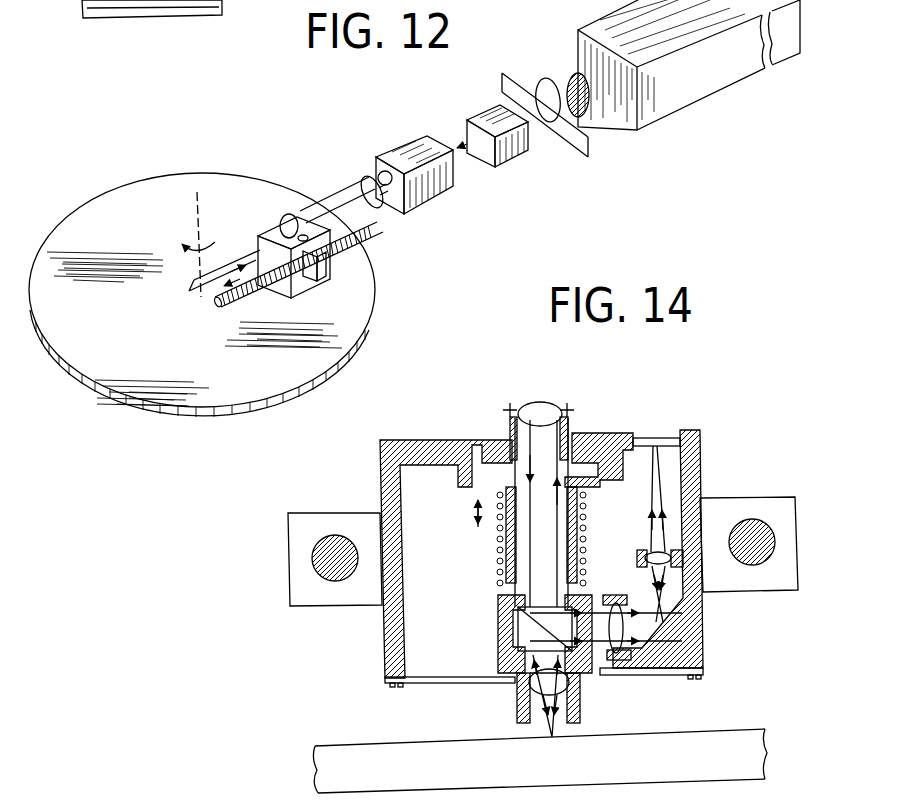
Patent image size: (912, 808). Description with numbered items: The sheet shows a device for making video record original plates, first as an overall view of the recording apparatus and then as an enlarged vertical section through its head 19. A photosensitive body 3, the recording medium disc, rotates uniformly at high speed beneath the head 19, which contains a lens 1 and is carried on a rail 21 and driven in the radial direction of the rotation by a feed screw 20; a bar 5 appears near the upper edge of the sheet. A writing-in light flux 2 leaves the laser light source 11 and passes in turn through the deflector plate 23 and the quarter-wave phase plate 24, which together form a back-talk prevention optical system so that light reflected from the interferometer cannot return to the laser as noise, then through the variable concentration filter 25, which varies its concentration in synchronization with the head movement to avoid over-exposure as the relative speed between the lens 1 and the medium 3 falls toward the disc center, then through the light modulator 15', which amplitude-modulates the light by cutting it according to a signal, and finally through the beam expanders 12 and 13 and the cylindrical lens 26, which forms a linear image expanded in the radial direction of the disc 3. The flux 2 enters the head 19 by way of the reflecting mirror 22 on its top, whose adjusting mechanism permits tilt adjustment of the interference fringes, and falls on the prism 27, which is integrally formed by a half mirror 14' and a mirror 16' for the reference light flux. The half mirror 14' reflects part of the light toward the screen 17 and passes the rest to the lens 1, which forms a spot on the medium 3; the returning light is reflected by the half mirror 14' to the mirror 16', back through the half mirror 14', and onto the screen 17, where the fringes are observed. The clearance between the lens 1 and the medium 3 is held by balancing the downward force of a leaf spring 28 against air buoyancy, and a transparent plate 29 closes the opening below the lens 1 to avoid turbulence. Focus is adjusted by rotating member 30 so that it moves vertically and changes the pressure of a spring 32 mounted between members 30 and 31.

In FIG. 14, the lens 1 is at (513, 683).
In FIG. 12, the writing-in light flux 2 is at (337, 196).
In FIG. 12, the photosensitive body 3 is at (342, 328).
In FIG. 14, the photosensitive body 3 is at (748, 746).
In FIG. 12, the support bar 5 is at (223, 4).
In FIG. 12, the laser light source 11 is at (685, 85).
In FIG. 12, the beam expander 12 is at (425, 190).
In FIG. 12, the beam expander 13 is at (430, 200).
In FIG. 14, the half mirror 14' is at (522, 640).
In FIG. 12, the light modulator 15' is at (511, 162).
In FIG. 14, the mirror for the reference light flux 16' is at (516, 629).
In FIG. 14, the screen 17 is at (655, 440).
In FIG. 12, the head 19 is at (277, 238).
In FIG. 14, the head 19 is at (437, 440).
In FIG. 12, the feed screw 20 is at (372, 233).
In FIG. 14, the feed screw 20 is at (752, 537).
In FIG. 12, the rail 21 is at (240, 254).
In FIG. 14, the rail 21 is at (335, 570).
In FIG. 12, the reflecting mirror 22 is at (287, 215).
In FIG. 14, the reflecting mirror 22 is at (540, 405).
In FIG. 12, the deflector plate 23 is at (570, 110).
In FIG. 12, the λ/4 phase plate 24 is at (547, 83).
In FIG. 12, the variable concentration filter 25 is at (578, 147).
In FIG. 12, the cylindrical lens 26 is at (362, 182).
In FIG. 14, the prism 27 is at (613, 655).
In FIG. 14, the leaf spring 28 is at (425, 683).
In FIG. 14, the transparent plate 29 is at (557, 727).
In FIG. 14, the member 30 is at (475, 487).
In FIG. 14, the member 31 is at (500, 604).
In FIG. 14, the spring 32 is at (505, 556).